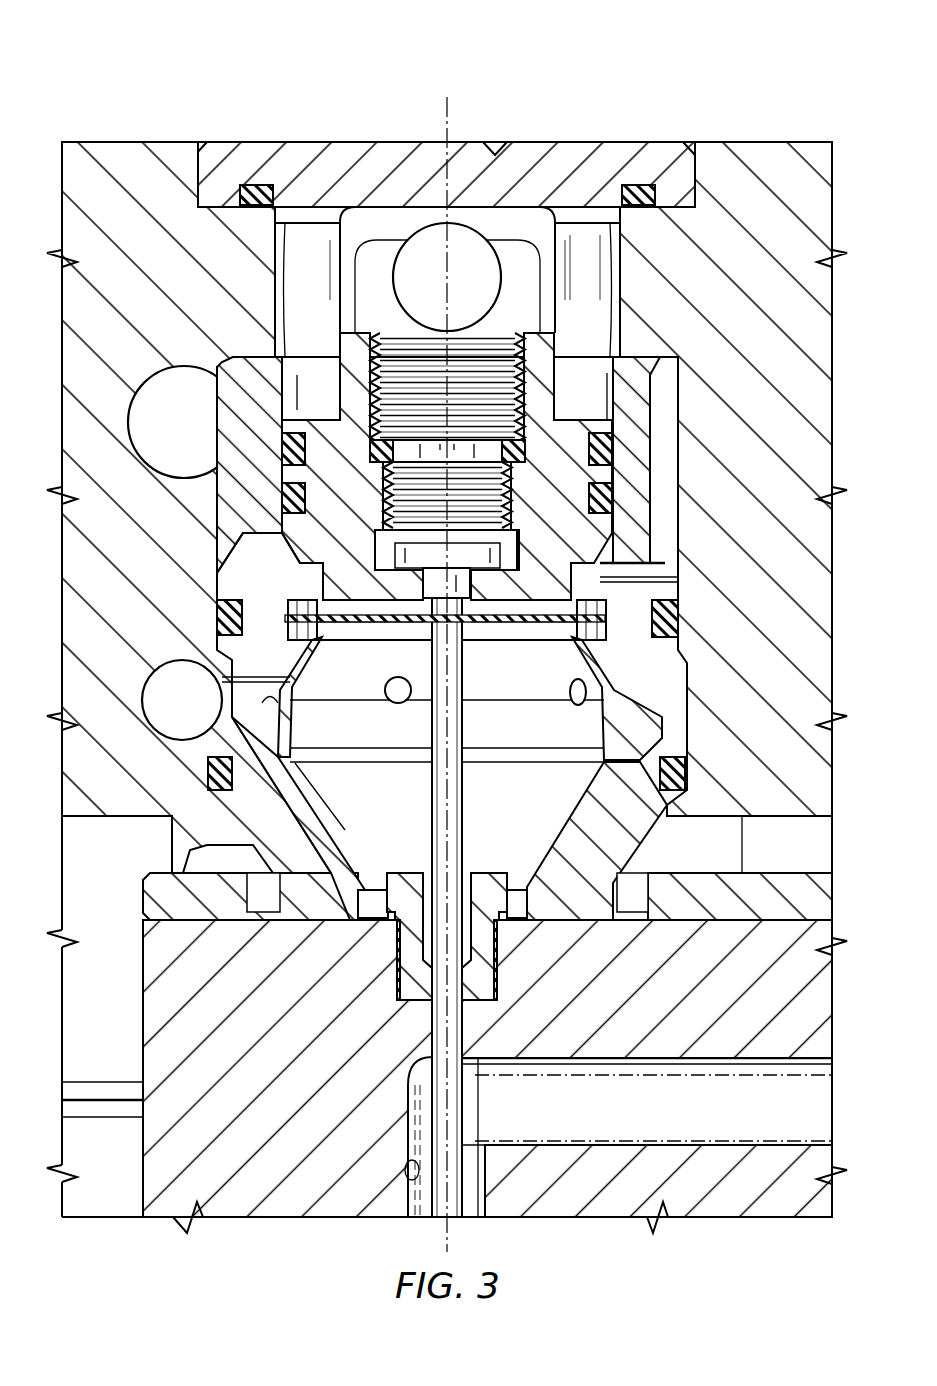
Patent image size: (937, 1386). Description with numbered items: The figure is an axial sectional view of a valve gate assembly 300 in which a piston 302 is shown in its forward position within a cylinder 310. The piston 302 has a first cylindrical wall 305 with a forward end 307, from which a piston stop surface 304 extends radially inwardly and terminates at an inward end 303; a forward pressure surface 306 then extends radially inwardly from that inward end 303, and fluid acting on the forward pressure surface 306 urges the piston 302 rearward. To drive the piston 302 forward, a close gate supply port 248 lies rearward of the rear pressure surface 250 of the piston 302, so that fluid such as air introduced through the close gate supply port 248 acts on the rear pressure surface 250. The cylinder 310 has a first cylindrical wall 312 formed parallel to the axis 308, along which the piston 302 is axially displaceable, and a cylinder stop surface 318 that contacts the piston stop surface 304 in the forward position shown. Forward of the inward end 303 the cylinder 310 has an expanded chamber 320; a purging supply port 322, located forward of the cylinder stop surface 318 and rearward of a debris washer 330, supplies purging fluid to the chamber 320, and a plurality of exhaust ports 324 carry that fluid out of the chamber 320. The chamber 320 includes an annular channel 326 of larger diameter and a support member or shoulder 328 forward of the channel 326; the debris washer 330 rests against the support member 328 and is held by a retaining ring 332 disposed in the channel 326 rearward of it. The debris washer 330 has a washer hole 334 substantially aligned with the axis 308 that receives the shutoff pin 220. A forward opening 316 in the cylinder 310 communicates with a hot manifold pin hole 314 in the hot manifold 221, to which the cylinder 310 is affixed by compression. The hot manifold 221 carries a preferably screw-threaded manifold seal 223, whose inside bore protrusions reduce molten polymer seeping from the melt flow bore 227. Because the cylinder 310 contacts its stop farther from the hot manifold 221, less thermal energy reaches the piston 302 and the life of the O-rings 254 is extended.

The valve gate assembly 300 is at (656, 87).
The axis 308 is at (450, 105).
The close gate supply port 248 is at (466, 295).
The piston 302 is at (327, 384).
The rear pressure surface 250 is at (598, 407).
The first cylindrical wall 312 is at (638, 406).
The cylinder 310 is at (240, 458).
The first cylindrical wall 305 is at (280, 528).
The forward end 307 is at (293, 556).
The cylinder stop surface 318 is at (272, 580).
The inward end 303 is at (200, 572).
The retaining ring 332 is at (372, 600).
The O-rings 254 is at (622, 500).
The piston stop surface 304 is at (590, 550).
The purging supply port 322 is at (652, 580).
The forward pressure surface 306 is at (375, 614).
The debris washer 330 is at (418, 619).
The washer hole 334 is at (464, 620).
The annular channel 326 is at (603, 610).
The exhaust ports 324 is at (268, 697).
The support member 328 is at (598, 700).
The expanded chamber 320 is at (522, 809).
The forward opening 316 is at (366, 892).
The hot manifold pin hole 314 is at (420, 998).
The manifold seal 223 is at (502, 978).
The shutoff pin 220 is at (466, 1095).
The melt flow bore 227 is at (405, 1180).
The hot manifold 221 is at (285, 1207).